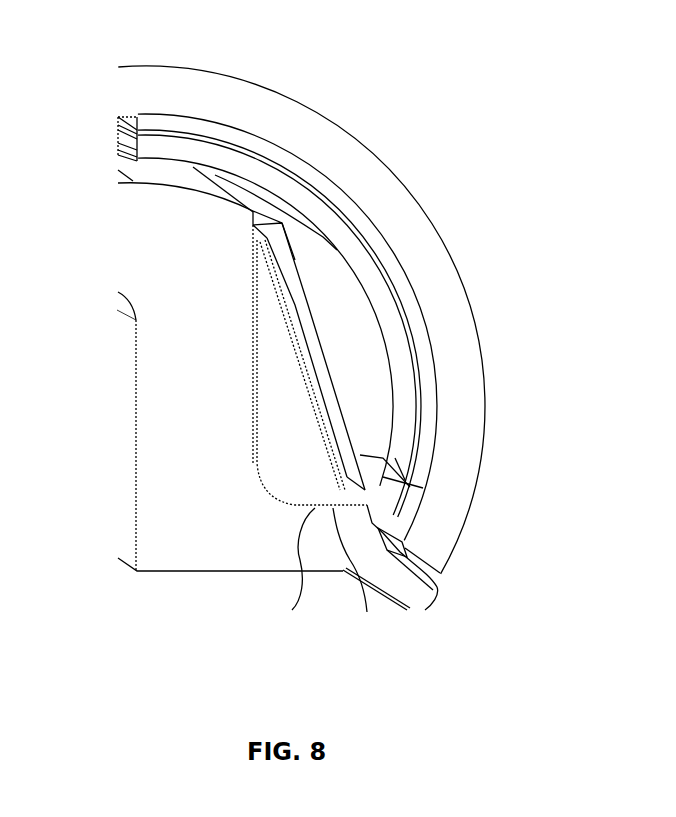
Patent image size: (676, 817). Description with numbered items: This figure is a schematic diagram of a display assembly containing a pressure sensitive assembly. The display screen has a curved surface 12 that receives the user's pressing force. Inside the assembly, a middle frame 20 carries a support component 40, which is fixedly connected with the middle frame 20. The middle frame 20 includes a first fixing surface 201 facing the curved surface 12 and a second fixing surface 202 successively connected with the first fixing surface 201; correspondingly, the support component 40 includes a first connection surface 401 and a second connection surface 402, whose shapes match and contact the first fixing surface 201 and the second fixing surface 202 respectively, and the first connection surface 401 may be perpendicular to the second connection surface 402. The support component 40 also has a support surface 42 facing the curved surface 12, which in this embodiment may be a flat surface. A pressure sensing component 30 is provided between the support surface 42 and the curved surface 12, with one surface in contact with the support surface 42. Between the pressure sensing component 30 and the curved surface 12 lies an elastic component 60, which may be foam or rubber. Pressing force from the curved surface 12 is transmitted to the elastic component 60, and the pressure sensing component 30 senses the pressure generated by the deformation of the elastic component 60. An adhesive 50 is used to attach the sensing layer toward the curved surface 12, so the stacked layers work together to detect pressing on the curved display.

The curved surface 12 is at (222, 93).
The middle frame 20 is at (188, 245).
The first fixing surface 201 is at (250, 348).
The second fixing surface 202 is at (289, 574).
The pressure sensing component 30 is at (297, 290).
The support component 40 is at (300, 467).
The first connection surface 401 is at (258, 397).
The second connection surface 402 is at (371, 576).
The support surface 42 is at (318, 420).
The adhesive 50 is at (300, 200).
The elastic component 60 is at (337, 277).